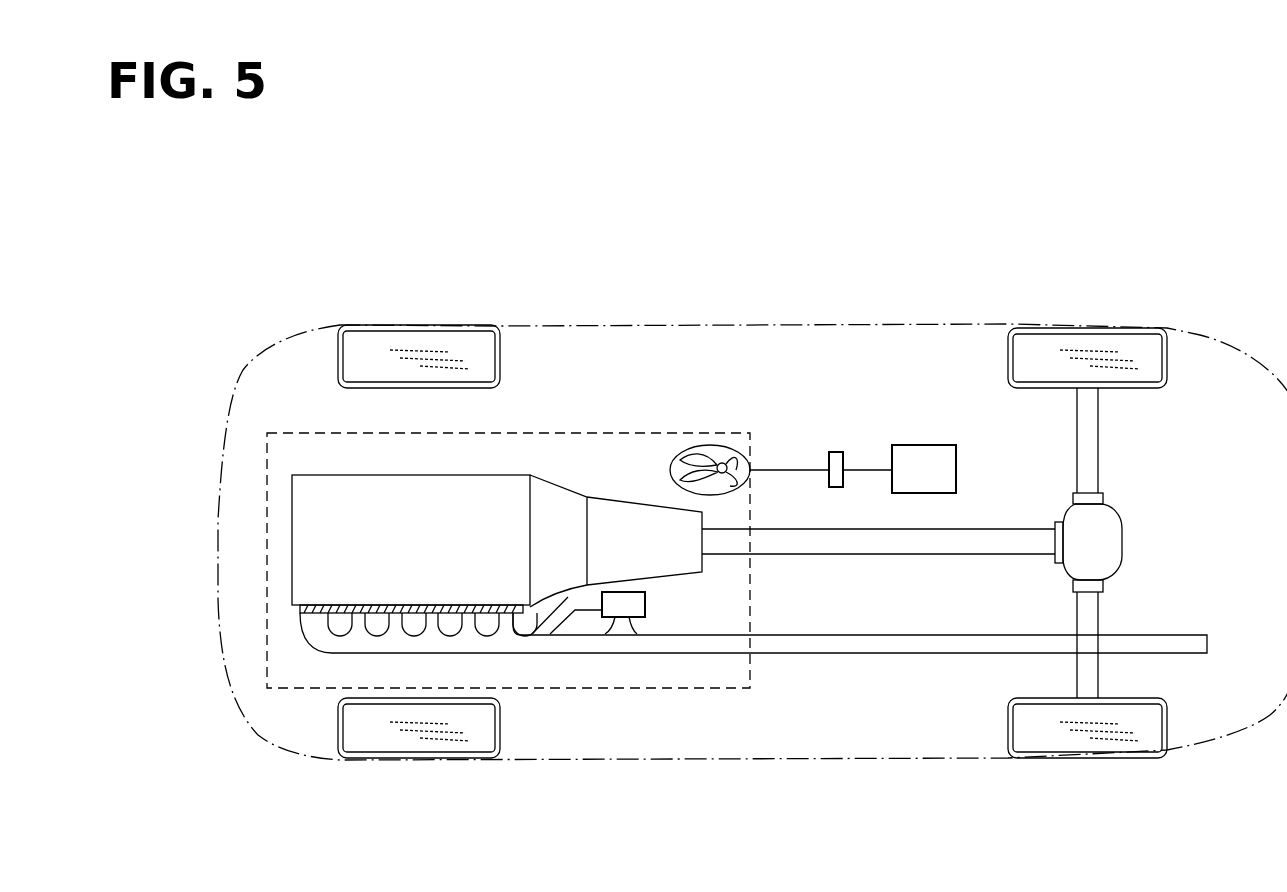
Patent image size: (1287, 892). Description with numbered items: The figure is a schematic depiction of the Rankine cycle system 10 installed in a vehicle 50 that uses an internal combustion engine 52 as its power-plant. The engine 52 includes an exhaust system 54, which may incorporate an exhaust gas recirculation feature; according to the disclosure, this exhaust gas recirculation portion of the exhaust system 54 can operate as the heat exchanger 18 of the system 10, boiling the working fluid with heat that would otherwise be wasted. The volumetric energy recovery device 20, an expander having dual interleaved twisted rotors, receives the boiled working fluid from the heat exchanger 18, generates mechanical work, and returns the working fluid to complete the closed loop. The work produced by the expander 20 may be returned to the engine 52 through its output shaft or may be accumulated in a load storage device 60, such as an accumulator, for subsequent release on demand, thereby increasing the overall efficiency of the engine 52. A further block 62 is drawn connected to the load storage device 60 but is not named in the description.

The vehicle 50 is at (1216, 316).
The exhaust system 54 is at (881, 653).
The system 10 is at (588, 433).
The internal combustion engine 52 is at (426, 542).
The volumetric energy recovery device 20 is at (713, 444).
The load storage device 60 is at (838, 452).
The controller 62 is at (943, 485).
The heat exchanger 18 is at (645, 602).